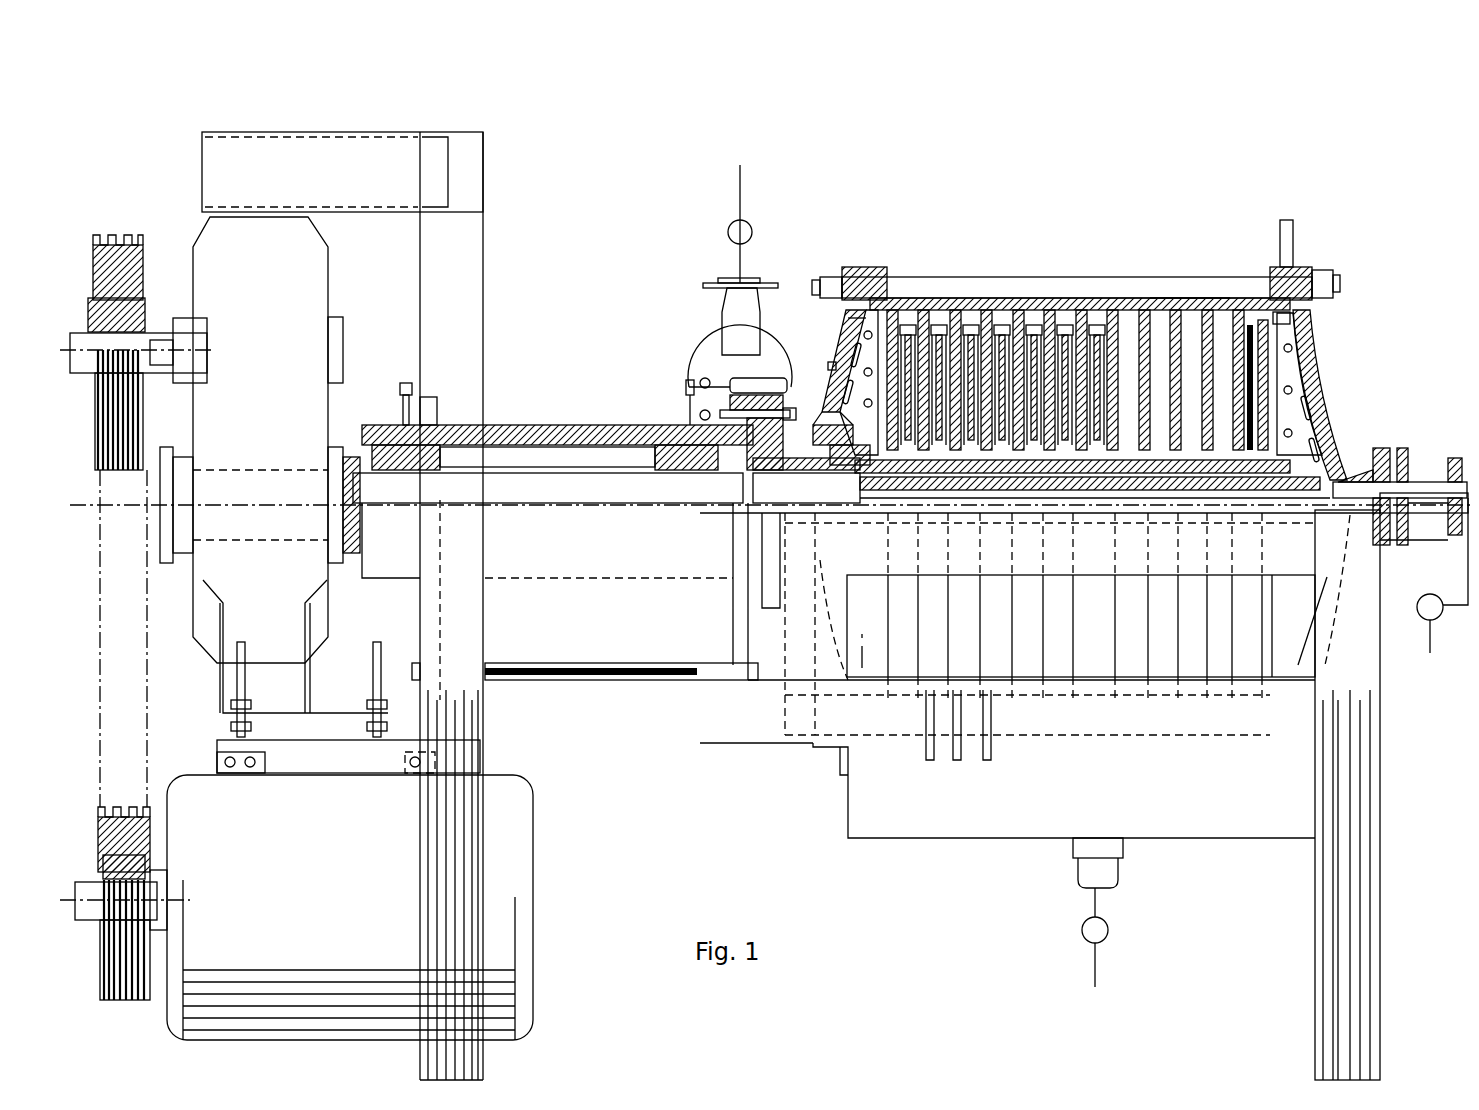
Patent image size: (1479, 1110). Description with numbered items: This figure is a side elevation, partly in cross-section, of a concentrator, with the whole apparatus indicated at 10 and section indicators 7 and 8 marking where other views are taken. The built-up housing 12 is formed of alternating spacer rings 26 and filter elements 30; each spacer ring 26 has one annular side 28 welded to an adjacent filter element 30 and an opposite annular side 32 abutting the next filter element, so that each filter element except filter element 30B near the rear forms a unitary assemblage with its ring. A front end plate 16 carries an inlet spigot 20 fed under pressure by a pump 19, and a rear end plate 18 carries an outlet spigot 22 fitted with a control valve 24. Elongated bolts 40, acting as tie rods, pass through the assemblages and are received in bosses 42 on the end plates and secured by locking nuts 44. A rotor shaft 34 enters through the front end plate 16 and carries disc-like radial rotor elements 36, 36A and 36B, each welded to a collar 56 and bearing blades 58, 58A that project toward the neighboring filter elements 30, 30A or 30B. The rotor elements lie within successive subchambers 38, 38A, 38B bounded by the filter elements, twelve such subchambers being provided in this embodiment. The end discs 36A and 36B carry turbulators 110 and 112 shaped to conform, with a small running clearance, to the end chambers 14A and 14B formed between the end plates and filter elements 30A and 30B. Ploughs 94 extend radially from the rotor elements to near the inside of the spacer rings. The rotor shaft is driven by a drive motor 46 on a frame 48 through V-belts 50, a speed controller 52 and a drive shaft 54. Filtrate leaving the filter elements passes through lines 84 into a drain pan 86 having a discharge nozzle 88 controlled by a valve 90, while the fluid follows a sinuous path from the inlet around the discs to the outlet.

The stripping apparatus 10 is at (566, 271).
The housing 12 is at (1185, 300).
The chamber 14A is at (838, 318).
The chamber 14B is at (1332, 403).
The front end plate 16 is at (845, 328).
The rear end plate 18 is at (1284, 326).
The pump 19 is at (727, 232).
The inlet spigot 20 is at (722, 305).
The outlet spigot 22 is at (1458, 460).
The control valve 24 is at (1437, 622).
The spacer ring 26 is at (1055, 318).
The annular side 28 is at (1047, 318).
The filter element 30 is at (1015, 310).
The filter element 30A is at (890, 308).
The filter element 30B is at (1315, 310).
The annular side 32 is at (1082, 318).
The rotor shaft 34 is at (876, 503).
The radial rotor element 36 is at (923, 318).
The radial rotor element 36A is at (850, 355).
The radial rotor element 36B is at (1292, 365).
The subchamber 38 is at (995, 330).
The subchamber 38A is at (908, 328).
The subchamber 38B is at (968, 328).
The elongated bolts 40 is at (1225, 286).
The bosses 42 is at (850, 267).
The locking nuts 44 is at (833, 277).
The drive motor 46 is at (517, 927).
The frame 48 is at (470, 878).
The V-belts 50 is at (135, 735).
The speed controller 52 is at (278, 349).
The drive shaft 54 is at (346, 452).
The collar 56 is at (982, 498).
The blades 58 is at (990, 320).
The blades 58A is at (1030, 325).
The section line 7- 7 is at (850, 662).
The section line 8- 8 is at (1318, 662).
The lines 84 is at (928, 760).
The drain pan 86 is at (853, 830).
The discharge nozzle 88 is at (1112, 873).
The valve 90 is at (1110, 932).
The ploughs 94 is at (1187, 298).
The turbulator 110 is at (828, 366).
The turbulator 112 is at (1302, 384).